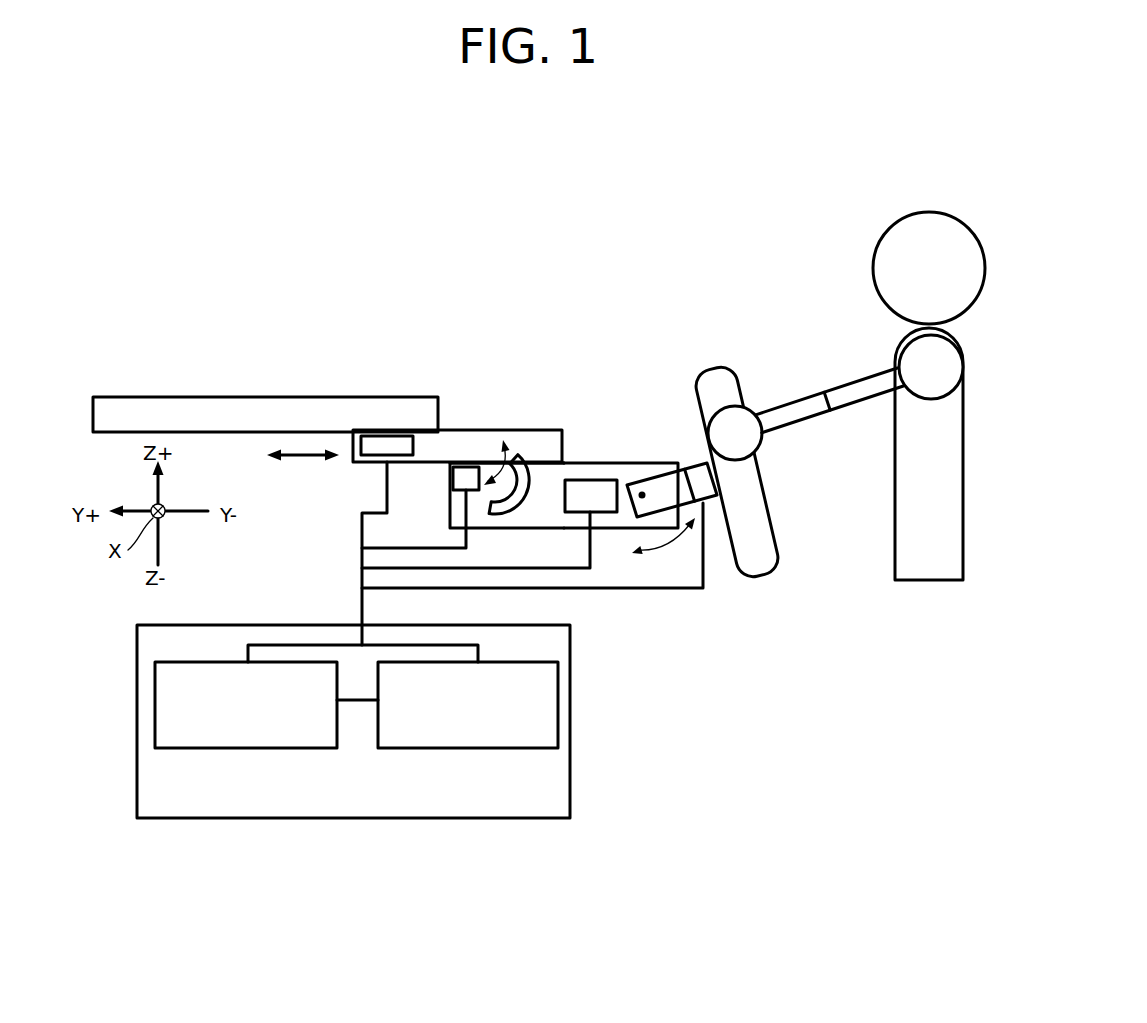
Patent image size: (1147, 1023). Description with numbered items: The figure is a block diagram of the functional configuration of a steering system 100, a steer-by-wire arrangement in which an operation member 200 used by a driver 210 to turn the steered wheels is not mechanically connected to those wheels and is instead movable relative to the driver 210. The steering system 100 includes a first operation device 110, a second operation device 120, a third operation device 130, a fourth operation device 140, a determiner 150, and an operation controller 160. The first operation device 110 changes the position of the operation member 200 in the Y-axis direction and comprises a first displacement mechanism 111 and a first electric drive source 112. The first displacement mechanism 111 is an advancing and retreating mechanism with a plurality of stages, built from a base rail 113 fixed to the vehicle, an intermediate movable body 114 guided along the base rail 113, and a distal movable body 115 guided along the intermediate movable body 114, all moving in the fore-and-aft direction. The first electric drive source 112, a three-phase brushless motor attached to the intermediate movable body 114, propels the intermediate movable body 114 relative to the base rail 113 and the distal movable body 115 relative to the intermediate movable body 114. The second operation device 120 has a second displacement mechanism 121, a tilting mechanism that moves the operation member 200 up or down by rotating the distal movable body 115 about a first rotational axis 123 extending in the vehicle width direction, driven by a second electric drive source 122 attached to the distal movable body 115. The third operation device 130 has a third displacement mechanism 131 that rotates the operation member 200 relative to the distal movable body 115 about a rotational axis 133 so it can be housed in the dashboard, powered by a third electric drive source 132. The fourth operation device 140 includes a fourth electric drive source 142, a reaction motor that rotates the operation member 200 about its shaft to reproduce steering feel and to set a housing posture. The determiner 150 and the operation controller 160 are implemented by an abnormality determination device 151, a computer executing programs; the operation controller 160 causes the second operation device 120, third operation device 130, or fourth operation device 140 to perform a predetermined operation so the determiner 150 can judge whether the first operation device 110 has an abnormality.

The steering system 100 is at (380, 260).
The first operation device 110 is at (300, 334).
The first displacement mechanism 111 is at (192, 397).
The first electric drive source 112 is at (372, 437).
The base rail 113 is at (223, 433).
The intermediate movable body 114 is at (430, 462).
The distal movable body 115 is at (612, 530).
The second operation device 120 is at (517, 349).
The second displacement mechanism 121 is at (515, 453).
The second electric drive source 122 is at (462, 462).
The first rotational axis 123 is at (468, 466).
The third operation device 130 is at (660, 354).
The third displacement mechanism 131 is at (670, 474).
The third electric drive source 132 is at (577, 480).
The rotational axis 133 is at (641, 491).
The fourth operation device 140 is at (748, 311).
The fourth electric drive source 142 is at (699, 461).
The determiner 150 is at (558, 703).
The abnormality determination device 151 is at (478, 818).
The operation controller 160 is at (155, 705).
The operation member 200 is at (781, 540).
The driver 210 is at (889, 231).